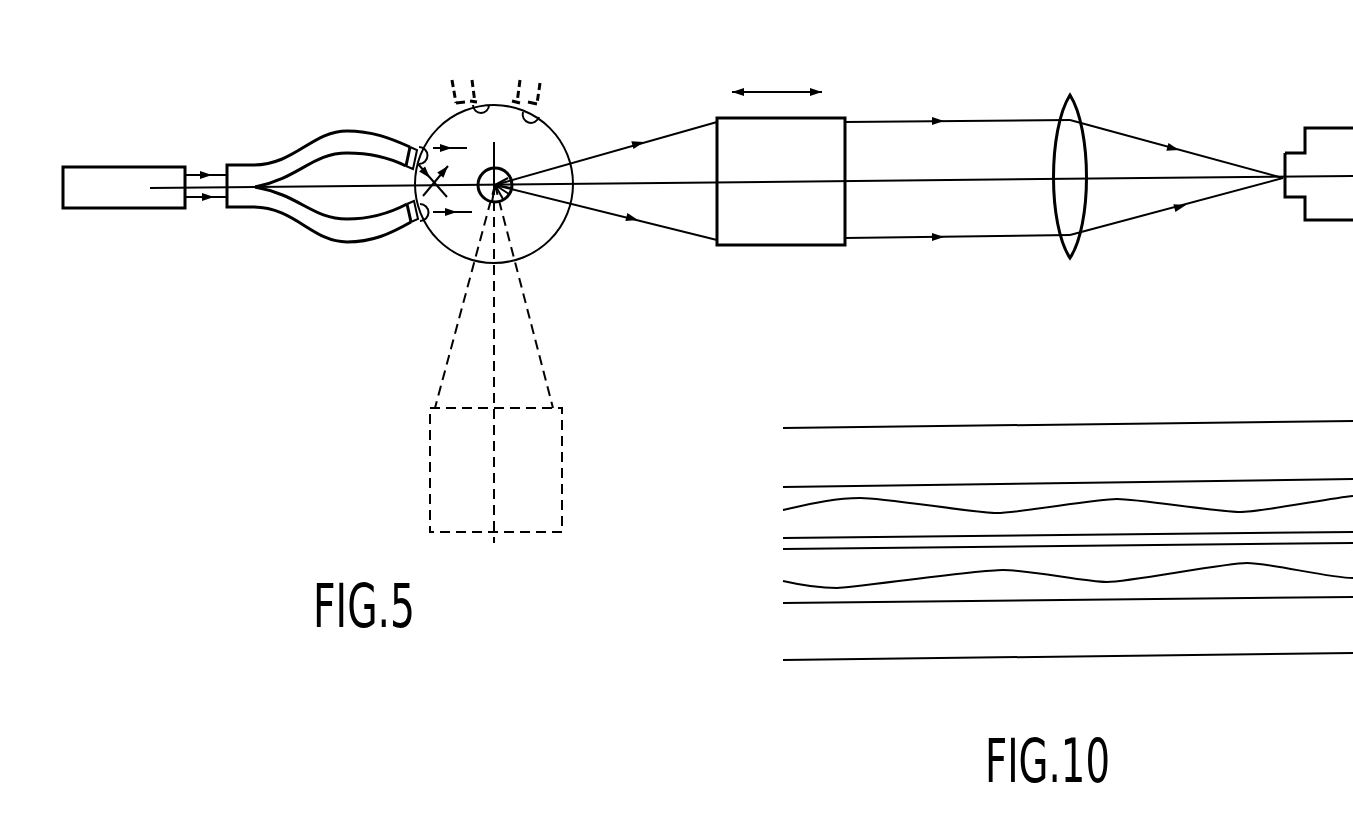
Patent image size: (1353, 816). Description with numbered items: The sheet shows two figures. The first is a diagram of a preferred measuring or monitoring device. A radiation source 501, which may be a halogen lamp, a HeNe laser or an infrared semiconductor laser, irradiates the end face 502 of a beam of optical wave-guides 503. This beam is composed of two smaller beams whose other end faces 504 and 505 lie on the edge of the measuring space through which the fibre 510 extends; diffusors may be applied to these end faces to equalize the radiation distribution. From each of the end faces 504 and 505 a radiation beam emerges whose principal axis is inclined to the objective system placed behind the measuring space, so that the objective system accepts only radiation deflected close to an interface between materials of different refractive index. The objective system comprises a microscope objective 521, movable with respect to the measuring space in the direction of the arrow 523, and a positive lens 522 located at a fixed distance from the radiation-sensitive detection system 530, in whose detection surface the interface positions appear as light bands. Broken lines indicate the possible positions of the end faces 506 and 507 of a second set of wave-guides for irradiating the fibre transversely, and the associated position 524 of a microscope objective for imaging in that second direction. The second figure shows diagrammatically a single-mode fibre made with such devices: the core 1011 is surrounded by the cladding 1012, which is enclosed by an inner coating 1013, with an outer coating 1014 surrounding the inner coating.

In FIG. 5, the radiation source 501 is at (115, 200).
In FIG. 5, the end face 502 is at (223, 172).
In FIG. 5, the beam of optical wave-guides 503 is at (242, 198).
In FIG. 5, the end face 504 is at (435, 136).
In FIG. 5, the end face 505 is at (423, 237).
In FIG. 5, the end face of second set of optical wave-guides 506 is at (494, 103).
In FIG. 5, the end face of second set of optical wave-guides 507 is at (541, 117).
In FIG. 5, the fibre 510 is at (500, 192).
In FIG. 5, the microscope objective 521 is at (767, 233).
In FIG. 5, the positive lens 522 is at (1070, 246).
In FIG. 5, the arrow 523 is at (778, 90).
In FIG. 5, the position of microscope objective 524 is at (545, 514).
In FIG. 5, the radiation-sensitive detection system 530 is at (1330, 213).
In FIG. 10, the core 1011 is at (853, 543).
In FIG. 10, the cladding 1012 is at (908, 568).
In FIG. 10, the inner coating 1013 is at (993, 583).
In FIG. 10, the lower boundary line 1014 is at (1100, 633).